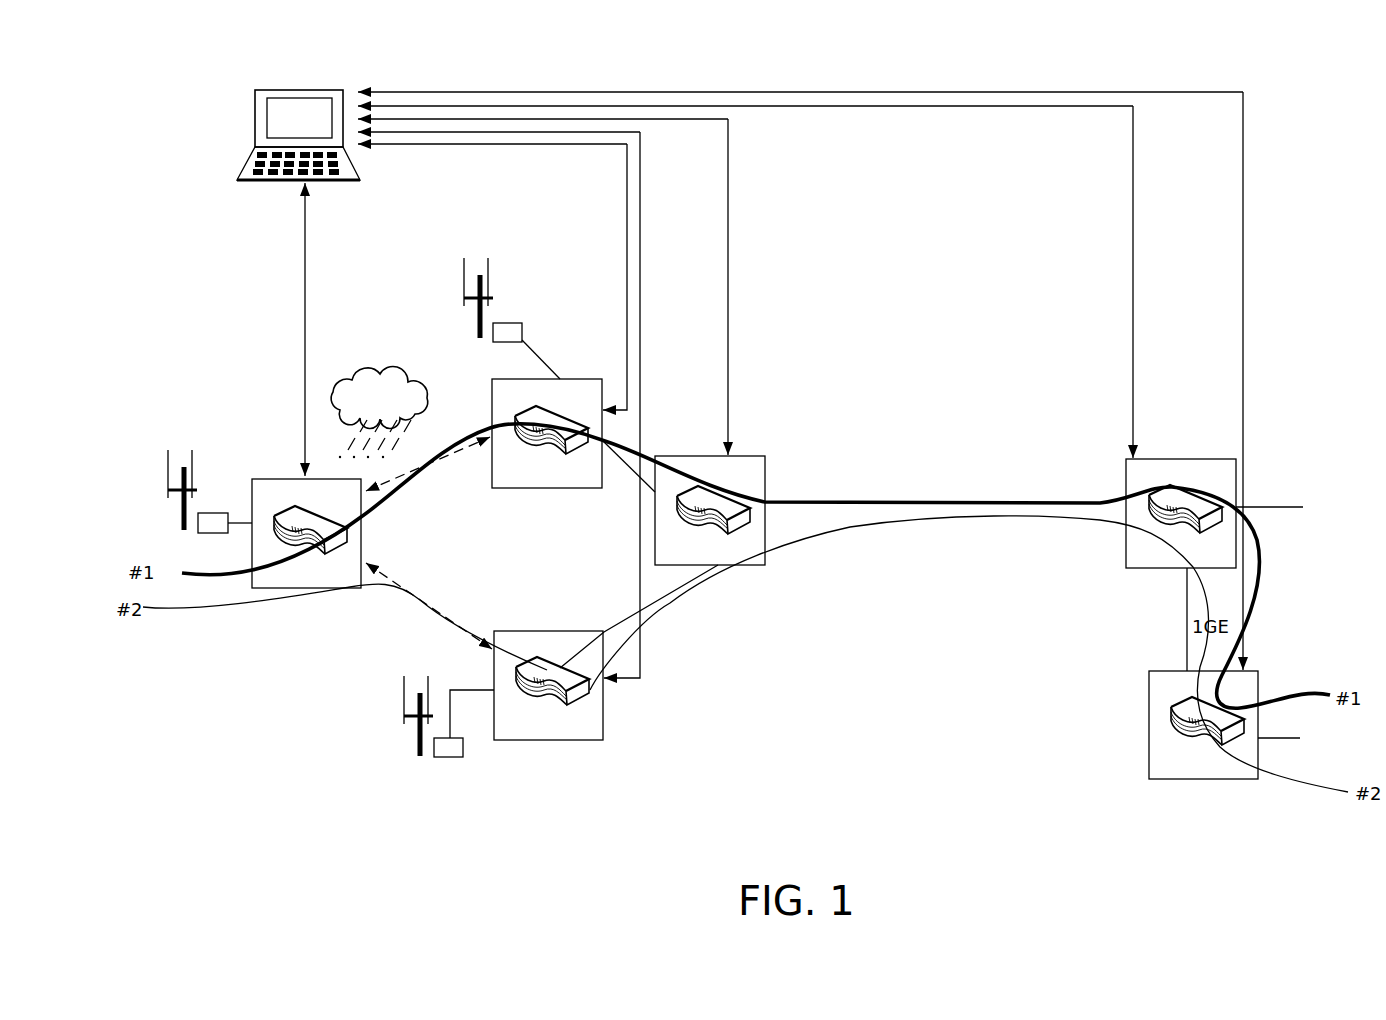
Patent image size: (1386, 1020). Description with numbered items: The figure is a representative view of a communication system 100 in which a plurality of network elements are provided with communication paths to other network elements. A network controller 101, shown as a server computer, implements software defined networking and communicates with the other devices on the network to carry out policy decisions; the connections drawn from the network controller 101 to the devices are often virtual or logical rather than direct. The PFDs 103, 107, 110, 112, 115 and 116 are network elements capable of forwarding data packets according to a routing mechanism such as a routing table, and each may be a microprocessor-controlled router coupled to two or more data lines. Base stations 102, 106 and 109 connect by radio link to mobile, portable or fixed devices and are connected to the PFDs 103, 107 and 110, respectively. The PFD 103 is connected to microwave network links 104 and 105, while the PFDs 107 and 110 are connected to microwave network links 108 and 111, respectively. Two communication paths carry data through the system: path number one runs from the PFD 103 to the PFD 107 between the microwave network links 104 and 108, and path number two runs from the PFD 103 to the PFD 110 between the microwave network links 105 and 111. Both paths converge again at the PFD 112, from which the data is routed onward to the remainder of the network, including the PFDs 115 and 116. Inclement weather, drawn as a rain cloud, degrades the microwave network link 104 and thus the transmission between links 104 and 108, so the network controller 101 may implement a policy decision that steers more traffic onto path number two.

The communication system 100 is at (233, 53).
The network controller 101 is at (308, 88).
The base station 102 is at (168, 446).
The PFD 103 is at (253, 478).
The microwave network link 104 is at (366, 490).
The microwave network link 105 is at (366, 562).
The base station 106 is at (480, 256).
The PFD 107 is at (560, 378).
The microwave network link 108 is at (490, 435).
The base station 109 is at (402, 714).
The PFD 110 is at (604, 693).
The microwave network link 111 is at (512, 630).
The PFD 112 is at (682, 456).
The PFD 115 is at (1170, 459).
The PFD 116 is at (1252, 671).